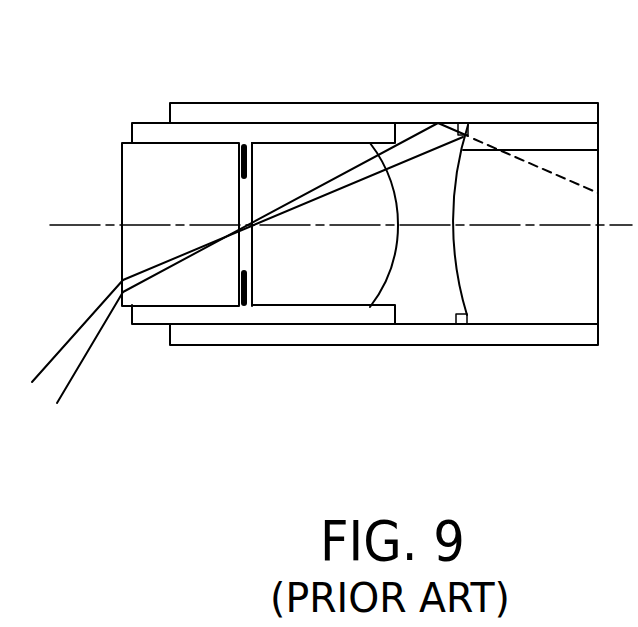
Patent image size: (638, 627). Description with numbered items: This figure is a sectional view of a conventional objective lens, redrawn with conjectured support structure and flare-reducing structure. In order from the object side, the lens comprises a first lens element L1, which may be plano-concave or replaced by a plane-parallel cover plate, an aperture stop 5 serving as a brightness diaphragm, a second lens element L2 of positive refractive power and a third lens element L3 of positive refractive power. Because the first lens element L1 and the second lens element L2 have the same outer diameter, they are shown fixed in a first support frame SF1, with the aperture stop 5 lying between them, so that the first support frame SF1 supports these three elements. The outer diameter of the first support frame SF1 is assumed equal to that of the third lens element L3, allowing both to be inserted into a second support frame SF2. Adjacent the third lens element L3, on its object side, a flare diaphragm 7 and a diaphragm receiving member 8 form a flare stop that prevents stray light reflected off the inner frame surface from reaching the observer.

The first support frame SF1 is at (152, 134).
The second support frame SF2 is at (533, 108).
The aperture stop 5 is at (248, 160).
The first lens element L1 is at (153, 290).
The second lens element L2 is at (307, 292).
The third lens element L3 is at (552, 308).
The flare diaphragm 7 is at (455, 316).
The diaphragm receiving member 8 is at (458, 326).